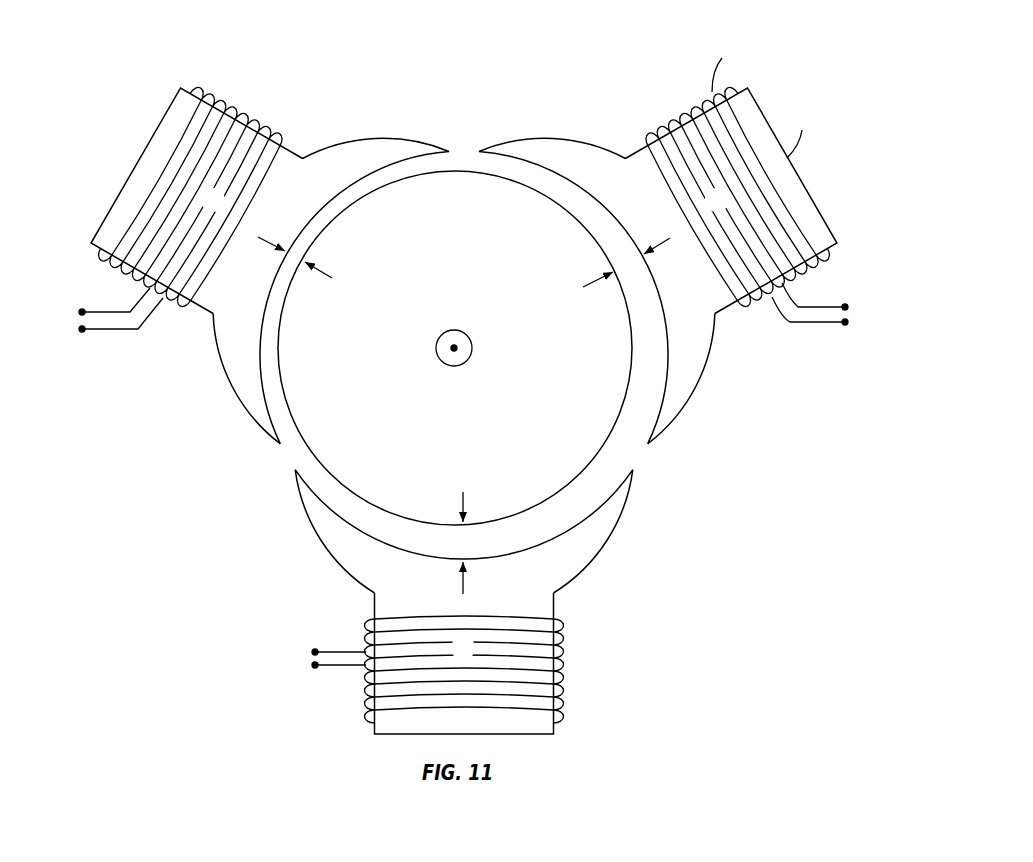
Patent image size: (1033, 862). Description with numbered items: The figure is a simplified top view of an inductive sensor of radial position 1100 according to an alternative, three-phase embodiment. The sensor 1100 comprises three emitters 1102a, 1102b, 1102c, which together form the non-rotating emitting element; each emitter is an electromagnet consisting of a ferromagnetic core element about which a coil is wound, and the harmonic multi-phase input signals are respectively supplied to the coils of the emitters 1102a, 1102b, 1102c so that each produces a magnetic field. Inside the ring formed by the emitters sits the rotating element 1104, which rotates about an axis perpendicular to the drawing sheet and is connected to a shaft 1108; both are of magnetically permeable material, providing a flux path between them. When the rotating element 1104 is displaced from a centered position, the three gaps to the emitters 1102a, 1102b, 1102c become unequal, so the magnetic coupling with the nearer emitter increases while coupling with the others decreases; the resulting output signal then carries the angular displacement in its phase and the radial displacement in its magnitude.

The inductive sensor of radial position 1100 is at (613, 65).
The emitter 1102a is at (707, 380).
The emitter 1102b is at (617, 537).
The emitter 1102c is at (381, 137).
The rotating element 1104 is at (540, 301).
The shaft 1108 is at (436, 352).